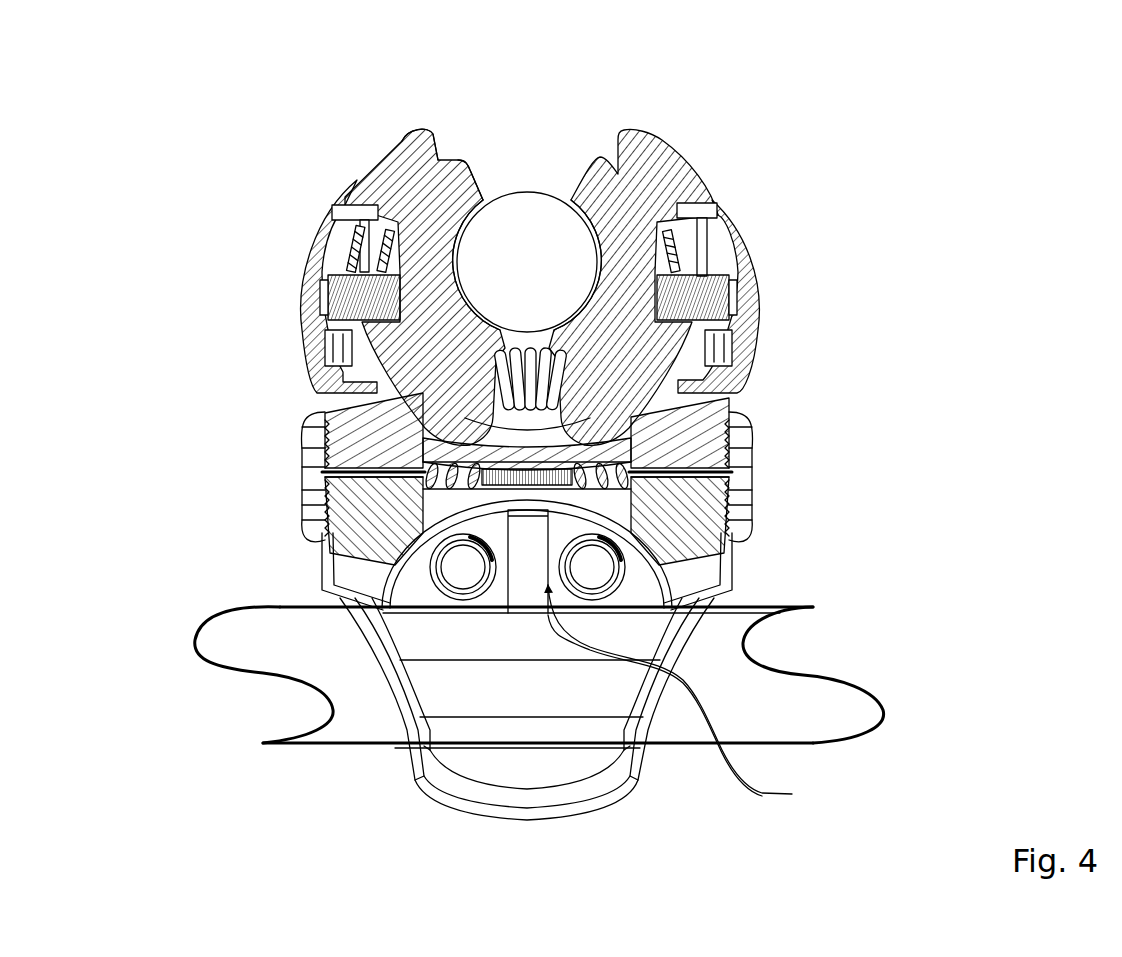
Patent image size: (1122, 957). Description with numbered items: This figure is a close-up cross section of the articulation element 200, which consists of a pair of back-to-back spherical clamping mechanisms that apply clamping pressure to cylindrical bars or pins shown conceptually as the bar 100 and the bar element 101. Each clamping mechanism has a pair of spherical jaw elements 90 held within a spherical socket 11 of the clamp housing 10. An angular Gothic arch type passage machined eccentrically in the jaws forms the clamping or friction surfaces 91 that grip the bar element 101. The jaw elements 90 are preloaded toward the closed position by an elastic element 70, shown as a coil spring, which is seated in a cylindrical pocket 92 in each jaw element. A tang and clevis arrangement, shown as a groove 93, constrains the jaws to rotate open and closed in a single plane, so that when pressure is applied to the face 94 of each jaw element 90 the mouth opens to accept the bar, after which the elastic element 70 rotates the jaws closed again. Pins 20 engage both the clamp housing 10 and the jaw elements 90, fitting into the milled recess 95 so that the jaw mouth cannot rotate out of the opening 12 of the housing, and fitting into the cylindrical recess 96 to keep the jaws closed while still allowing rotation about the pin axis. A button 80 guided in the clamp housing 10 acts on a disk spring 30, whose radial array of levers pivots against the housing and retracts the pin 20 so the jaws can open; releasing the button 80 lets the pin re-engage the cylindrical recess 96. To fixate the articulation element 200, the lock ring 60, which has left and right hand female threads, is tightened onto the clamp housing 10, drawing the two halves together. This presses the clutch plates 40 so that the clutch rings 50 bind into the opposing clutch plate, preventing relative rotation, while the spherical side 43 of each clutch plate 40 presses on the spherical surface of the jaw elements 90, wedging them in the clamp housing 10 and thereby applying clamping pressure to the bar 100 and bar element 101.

The clamp housing 10 is at (358, 181).
The spherical socket 11 is at (390, 210).
The opening 12 is at (441, 148).
The pin 20 is at (325, 288).
The disk spring 30 is at (347, 348).
The clutch plate 40 is at (325, 555).
The spherical side 43 is at (427, 445).
The clutch ring 50 is at (665, 532).
The lock ring 60 is at (758, 448).
The elastic element 70 is at (553, 403).
The button 80 is at (733, 242).
The spherical jaw element 90 is at (635, 201).
The clamping surface 91 is at (467, 218).
The cylindrical pocket 92 is at (325, 413).
The groove 93 is at (682, 694).
The face 94 is at (482, 177).
The milled recess 95 is at (667, 328).
The cylindrical recess 96 is at (380, 245).
The bar 100 is at (355, 697).
The bar element 101 is at (523, 192).
The articulation element 200 is at (637, 98).